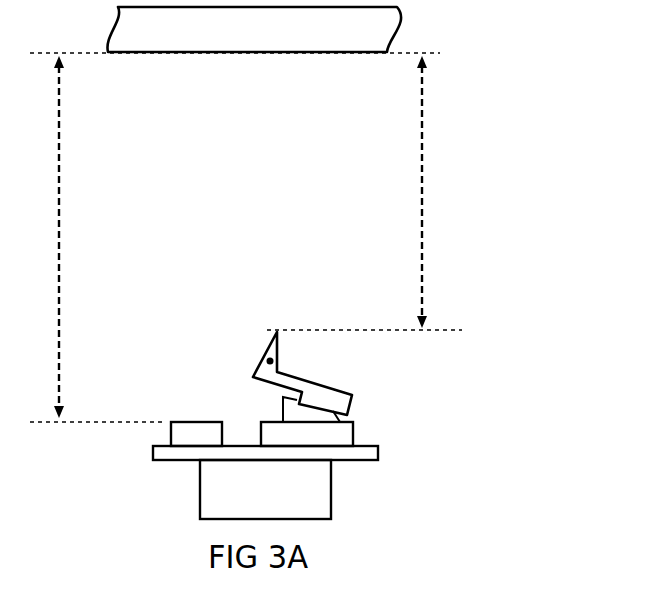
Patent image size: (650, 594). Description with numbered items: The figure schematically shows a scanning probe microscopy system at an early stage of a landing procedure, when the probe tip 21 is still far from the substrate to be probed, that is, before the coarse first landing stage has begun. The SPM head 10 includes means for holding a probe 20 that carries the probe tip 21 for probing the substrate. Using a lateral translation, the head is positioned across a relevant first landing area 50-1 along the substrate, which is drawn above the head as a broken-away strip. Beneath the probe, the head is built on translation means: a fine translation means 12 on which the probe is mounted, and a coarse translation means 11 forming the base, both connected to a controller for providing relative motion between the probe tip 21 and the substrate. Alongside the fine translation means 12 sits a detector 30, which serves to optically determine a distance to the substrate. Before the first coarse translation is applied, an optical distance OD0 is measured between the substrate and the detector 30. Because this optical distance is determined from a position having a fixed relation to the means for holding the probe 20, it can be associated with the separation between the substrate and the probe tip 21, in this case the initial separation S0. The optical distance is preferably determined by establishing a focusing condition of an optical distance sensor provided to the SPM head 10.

The first landing area 50-1 is at (254, 29).
The optical distance OD0 is at (358, 189).
The initial separation S0 is at (368, 189).
The SPM head 10 is at (458, 418).
The coarse translation means 11 is at (265, 482).
The fine translation means 12 is at (307, 422).
The detector 30 is at (196, 435).
The probe 20 is at (340, 374).
The probe tip 21 is at (266, 361).